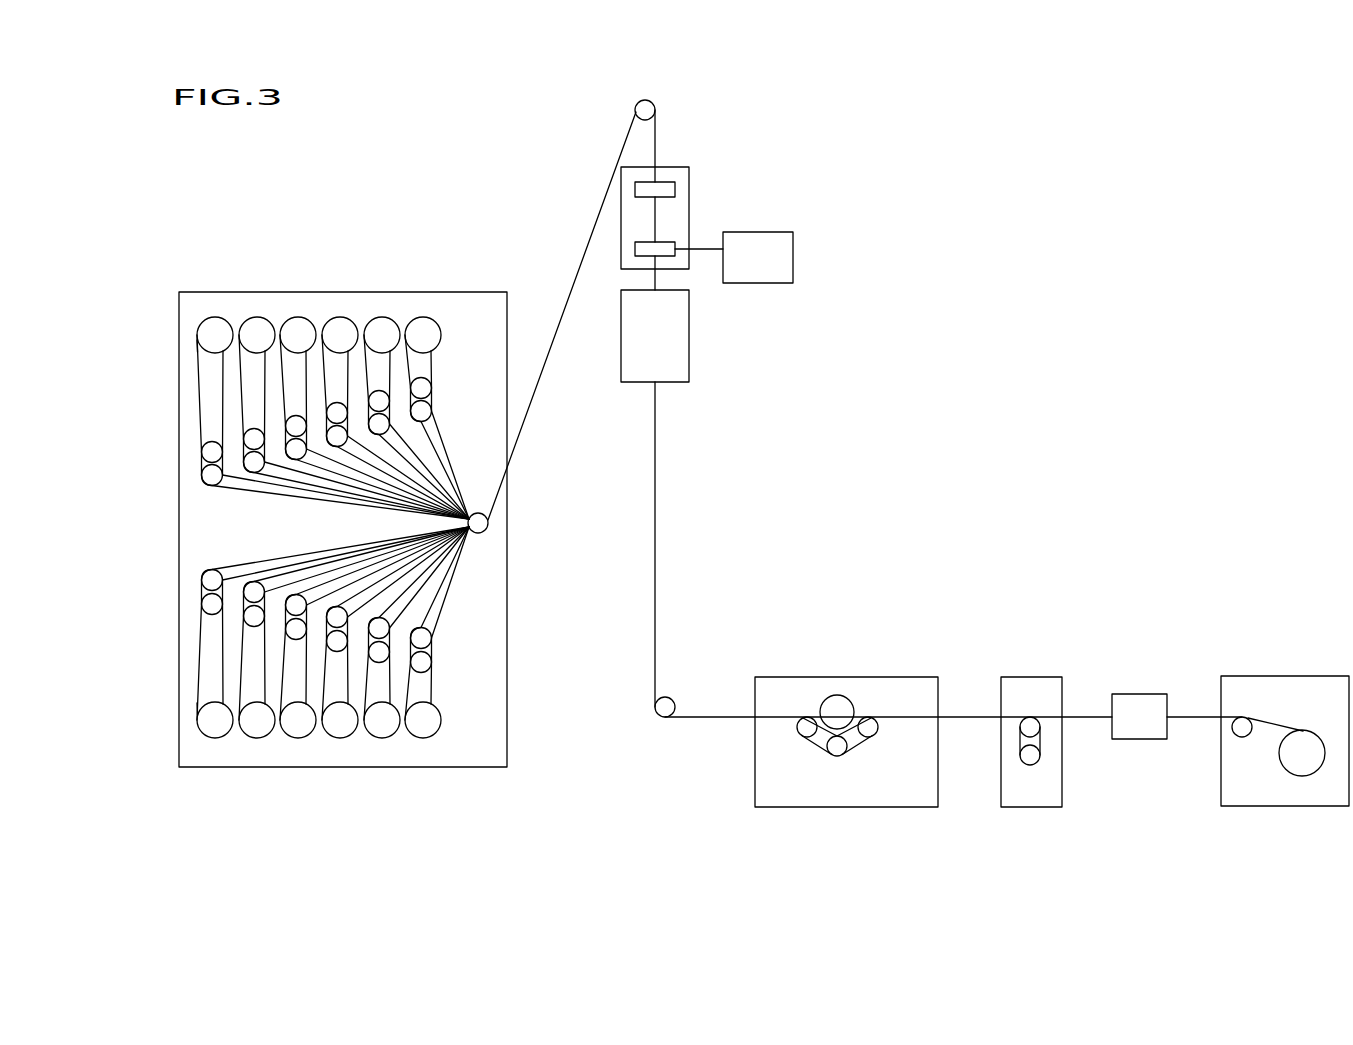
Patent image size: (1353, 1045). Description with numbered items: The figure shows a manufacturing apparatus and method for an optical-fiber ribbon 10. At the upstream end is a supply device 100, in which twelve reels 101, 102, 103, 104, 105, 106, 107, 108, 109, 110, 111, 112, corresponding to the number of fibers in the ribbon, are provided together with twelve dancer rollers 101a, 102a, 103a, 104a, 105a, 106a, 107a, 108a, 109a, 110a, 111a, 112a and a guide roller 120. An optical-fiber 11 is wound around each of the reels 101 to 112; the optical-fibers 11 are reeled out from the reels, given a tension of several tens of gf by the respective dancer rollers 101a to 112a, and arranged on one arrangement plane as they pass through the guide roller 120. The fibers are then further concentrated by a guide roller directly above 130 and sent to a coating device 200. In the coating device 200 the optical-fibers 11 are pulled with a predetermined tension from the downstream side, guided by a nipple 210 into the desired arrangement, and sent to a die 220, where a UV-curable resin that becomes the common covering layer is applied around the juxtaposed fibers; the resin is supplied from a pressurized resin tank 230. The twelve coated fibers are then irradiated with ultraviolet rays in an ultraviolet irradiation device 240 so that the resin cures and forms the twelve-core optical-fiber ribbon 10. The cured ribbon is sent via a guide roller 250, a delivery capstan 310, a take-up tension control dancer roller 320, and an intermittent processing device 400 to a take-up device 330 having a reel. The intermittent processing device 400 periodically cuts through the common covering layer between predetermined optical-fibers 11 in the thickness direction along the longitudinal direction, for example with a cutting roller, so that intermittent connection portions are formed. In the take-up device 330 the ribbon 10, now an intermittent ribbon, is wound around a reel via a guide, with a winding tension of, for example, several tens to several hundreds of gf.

The optical-fiber ribbon 10 is at (657, 477).
The optical-fiber 11 is at (198, 372).
The supply device 100 is at (483, 292).
The reel 101 is at (213, 730).
The reel 102 is at (257, 730).
The reel 103 is at (299, 730).
The reel 104 is at (340, 730).
The reel 105 is at (383, 730).
The reel 106 is at (425, 730).
The reel 107 is at (213, 327).
The reel 108 is at (257, 327).
The reel 109 is at (299, 327).
The reel 110 is at (341, 327).
The reel 111 is at (383, 327).
The reel 112 is at (425, 327).
The dancer roller 101a is at (203, 595).
The dancer roller 102a is at (244, 608).
The dancer roller 103a is at (285, 624).
The dancer roller 104a is at (348, 624).
The dancer roller 105a is at (390, 636).
The dancer roller 106a is at (432, 651).
The dancer roller 107a is at (203, 463).
The dancer roller 108a is at (244, 448).
The dancer roller 109a is at (285, 433).
The dancer roller 110a is at (348, 432).
The dancer roller 111a is at (390, 418).
The dancer roller 112a is at (432, 401).
The guide roller 120 is at (488, 523).
The guide roller 130 is at (637, 112).
The coating device 200 is at (708, 152).
The nipple 210 is at (675, 190).
The die 220 is at (665, 242).
The resin tank 230 is at (797, 255).
The ultraviolet irradiation device 240 is at (689, 338).
The guide roller 250 is at (668, 698).
The delivery capstan 310 is at (875, 677).
The take-up tension control dancer roller 320 is at (1035, 677).
The take-up device 330 is at (1307, 677).
The intermittent processing device 400 is at (1138, 694).